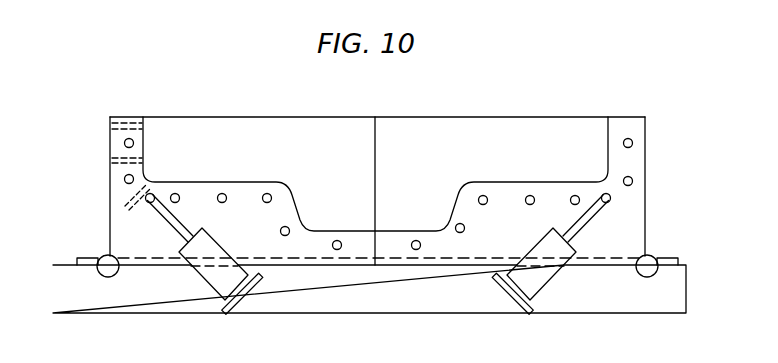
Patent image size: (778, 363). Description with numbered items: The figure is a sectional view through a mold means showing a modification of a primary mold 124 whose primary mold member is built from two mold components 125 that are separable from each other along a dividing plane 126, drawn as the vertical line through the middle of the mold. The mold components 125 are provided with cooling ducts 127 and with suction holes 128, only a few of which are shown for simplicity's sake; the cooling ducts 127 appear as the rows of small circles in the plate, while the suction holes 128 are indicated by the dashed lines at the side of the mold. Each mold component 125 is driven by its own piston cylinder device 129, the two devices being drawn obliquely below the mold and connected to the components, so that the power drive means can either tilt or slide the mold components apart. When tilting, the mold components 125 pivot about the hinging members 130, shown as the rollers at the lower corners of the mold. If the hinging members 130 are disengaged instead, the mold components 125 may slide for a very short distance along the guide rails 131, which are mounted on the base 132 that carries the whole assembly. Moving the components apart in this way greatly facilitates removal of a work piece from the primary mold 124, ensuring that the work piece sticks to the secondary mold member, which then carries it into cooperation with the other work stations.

The primary mold 124 is at (507, 86).
The mold components 125 is at (247, 117).
The dividing plane 126 is at (375, 119).
The cooling ducts 127 is at (265, 194).
The suction holes 128 is at (143, 128).
The piston cylinder device 129 is at (218, 286).
The hinging members 130 is at (107, 263).
The guide rails 131 is at (80, 258).
The base 132 is at (641, 307).